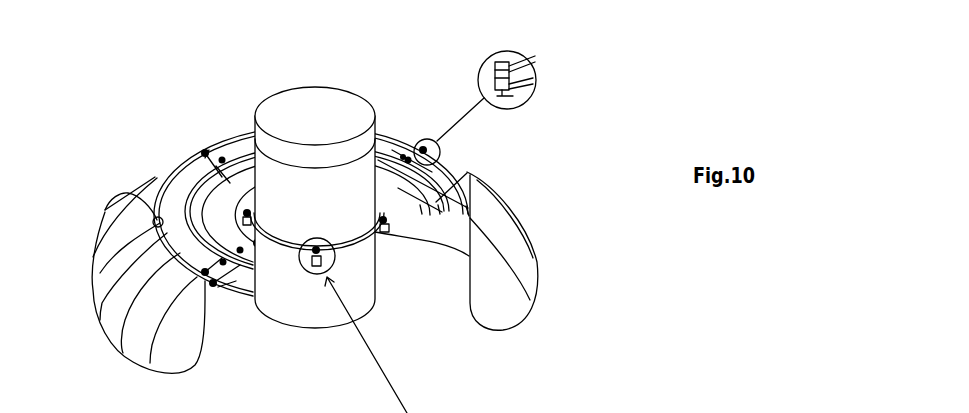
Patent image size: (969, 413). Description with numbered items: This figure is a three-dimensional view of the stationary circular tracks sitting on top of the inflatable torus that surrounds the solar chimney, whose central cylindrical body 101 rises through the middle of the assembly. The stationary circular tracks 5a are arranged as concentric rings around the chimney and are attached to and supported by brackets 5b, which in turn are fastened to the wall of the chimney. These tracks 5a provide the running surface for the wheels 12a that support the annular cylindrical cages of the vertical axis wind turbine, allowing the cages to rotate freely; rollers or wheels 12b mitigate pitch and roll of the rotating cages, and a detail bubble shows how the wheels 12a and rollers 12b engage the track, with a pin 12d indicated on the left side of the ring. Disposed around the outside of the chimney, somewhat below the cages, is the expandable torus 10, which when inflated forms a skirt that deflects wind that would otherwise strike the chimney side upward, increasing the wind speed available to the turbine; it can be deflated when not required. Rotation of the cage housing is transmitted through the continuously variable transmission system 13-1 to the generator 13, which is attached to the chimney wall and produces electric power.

The cylindrical body 101 is at (361, 88).
The wheels 12a is at (524, 57).
The rollers/wheels 12b is at (533, 84).
The hinge pin 12d is at (105, 210).
The stationary circular tracks 5a is at (467, 173).
The brackets 5b is at (240, 292).
The expandable torus 10 is at (538, 258).
The generator 13 is at (312, 270).
The continuously variable transmission system 13-1 is at (336, 252).